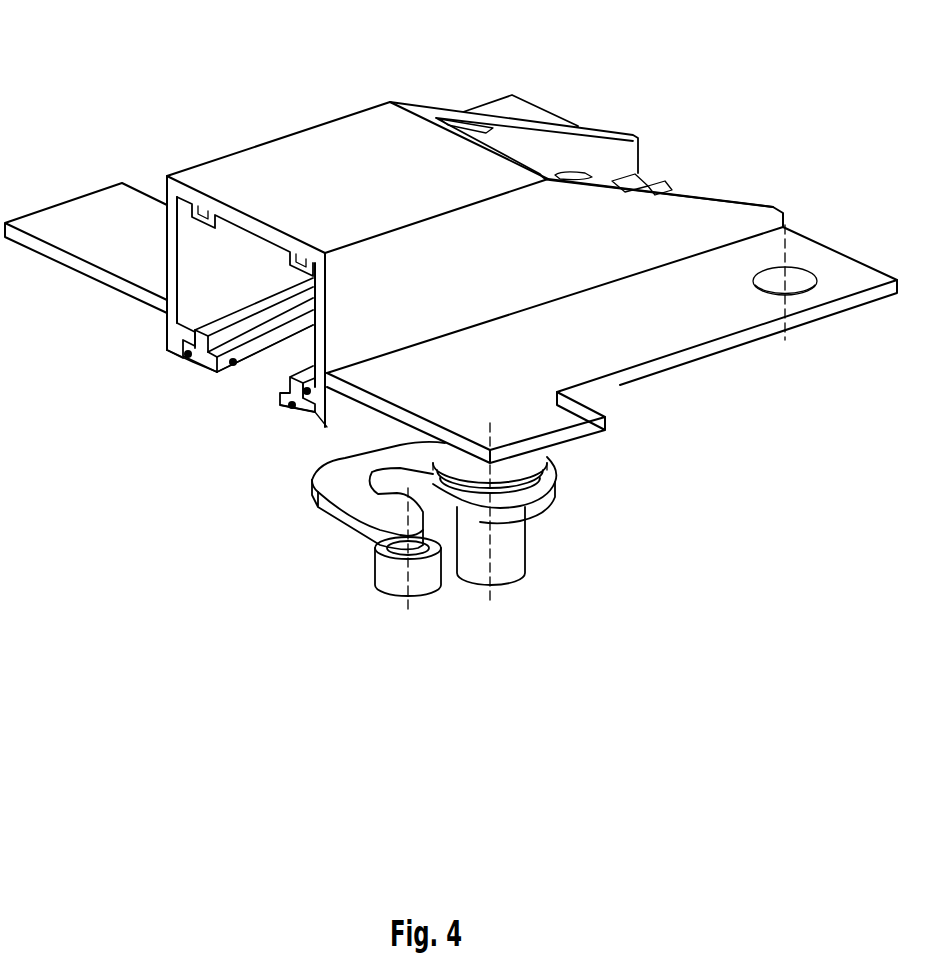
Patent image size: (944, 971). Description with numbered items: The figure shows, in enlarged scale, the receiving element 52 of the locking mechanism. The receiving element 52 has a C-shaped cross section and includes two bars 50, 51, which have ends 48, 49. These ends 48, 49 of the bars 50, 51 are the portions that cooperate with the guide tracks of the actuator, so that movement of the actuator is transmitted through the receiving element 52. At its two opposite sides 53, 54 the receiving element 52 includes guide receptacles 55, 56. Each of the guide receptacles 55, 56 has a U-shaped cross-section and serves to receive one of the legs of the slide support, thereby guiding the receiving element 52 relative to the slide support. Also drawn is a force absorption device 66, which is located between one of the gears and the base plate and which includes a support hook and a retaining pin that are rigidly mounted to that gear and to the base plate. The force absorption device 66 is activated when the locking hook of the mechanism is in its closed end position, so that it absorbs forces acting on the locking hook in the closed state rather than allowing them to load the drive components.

The side 54 is at (213, 192).
The receiving element 52 is at (310, 115).
The guide receptacle 56 is at (180, 333).
The bar 51 is at (186, 355).
The side 53 is at (187, 372).
The end 49 is at (231, 364).
The end 48 is at (273, 397).
The bar 50 is at (290, 407).
The guide receptacle 55 is at (306, 394).
The force absorption device 66 is at (440, 596).